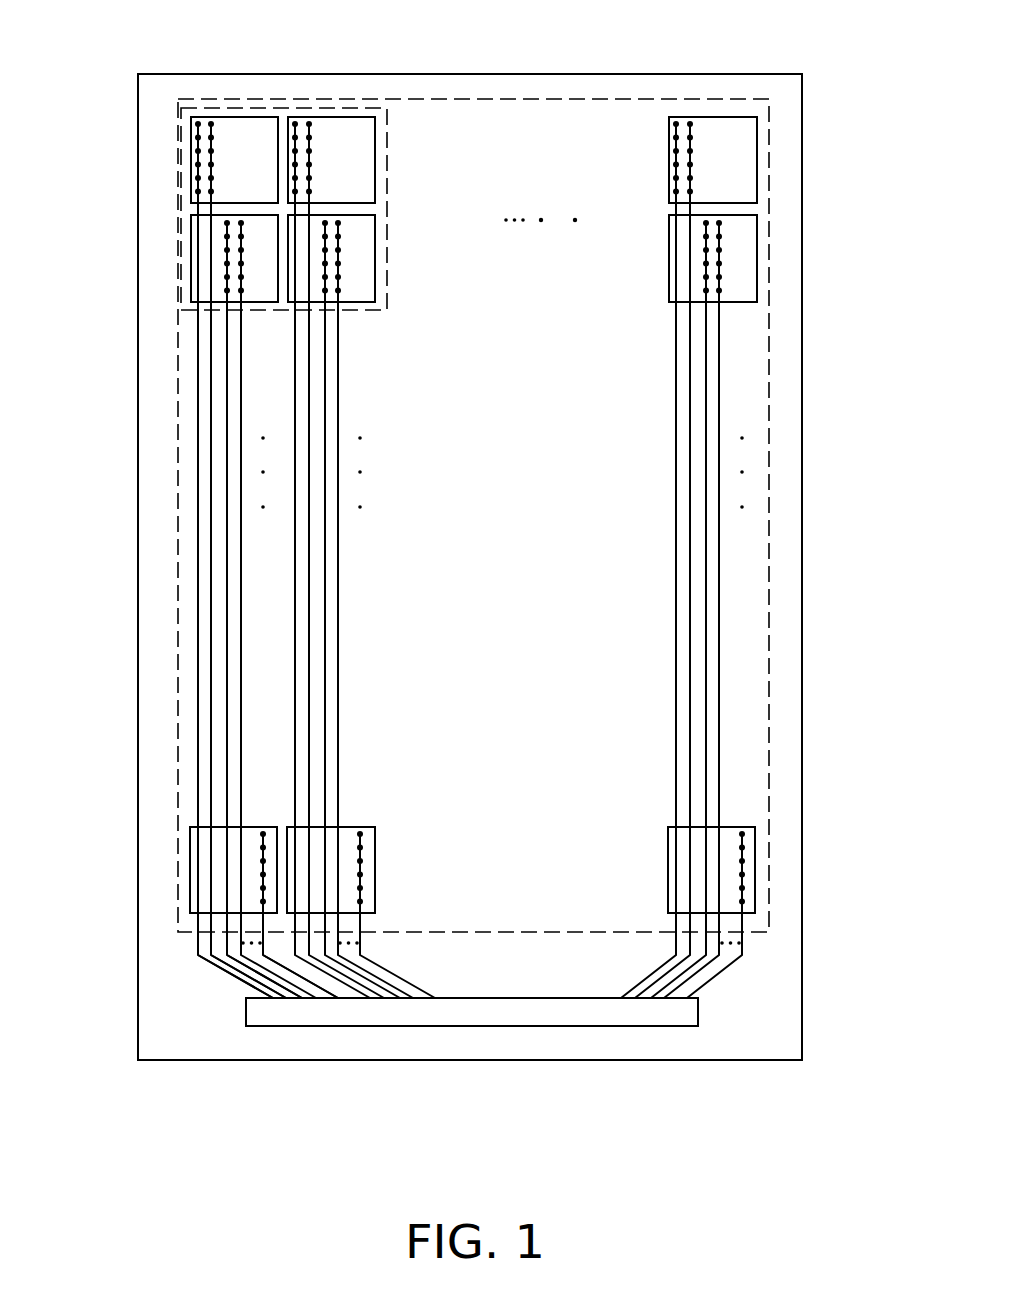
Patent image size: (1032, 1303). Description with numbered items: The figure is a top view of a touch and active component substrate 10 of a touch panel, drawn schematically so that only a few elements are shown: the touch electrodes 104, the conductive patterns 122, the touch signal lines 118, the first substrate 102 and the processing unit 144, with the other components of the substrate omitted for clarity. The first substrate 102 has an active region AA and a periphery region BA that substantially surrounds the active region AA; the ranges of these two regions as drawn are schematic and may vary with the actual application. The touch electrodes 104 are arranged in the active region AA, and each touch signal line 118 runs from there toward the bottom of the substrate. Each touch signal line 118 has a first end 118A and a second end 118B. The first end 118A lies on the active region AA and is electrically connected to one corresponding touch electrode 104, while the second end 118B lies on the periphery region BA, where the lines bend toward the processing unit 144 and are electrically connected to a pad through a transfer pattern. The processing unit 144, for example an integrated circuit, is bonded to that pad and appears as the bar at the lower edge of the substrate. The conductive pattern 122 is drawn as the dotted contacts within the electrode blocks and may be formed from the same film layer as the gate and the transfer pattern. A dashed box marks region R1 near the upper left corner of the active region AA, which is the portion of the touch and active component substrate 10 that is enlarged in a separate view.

The touch and active component substrate 10 is at (893, 1096).
The first substrate 102 is at (803, 645).
The touch electrode 104 is at (192, 162).
The touch signal line 118 is at (240, 378).
The first end 118A is at (222, 258).
The second end 118B is at (254, 972).
The conductive pattern 122 is at (222, 235).
The processing unit 144 is at (595, 1027).
The active region AA is at (769, 502).
The periphery region BA is at (748, 1000).
The region R1 is at (313, 100).